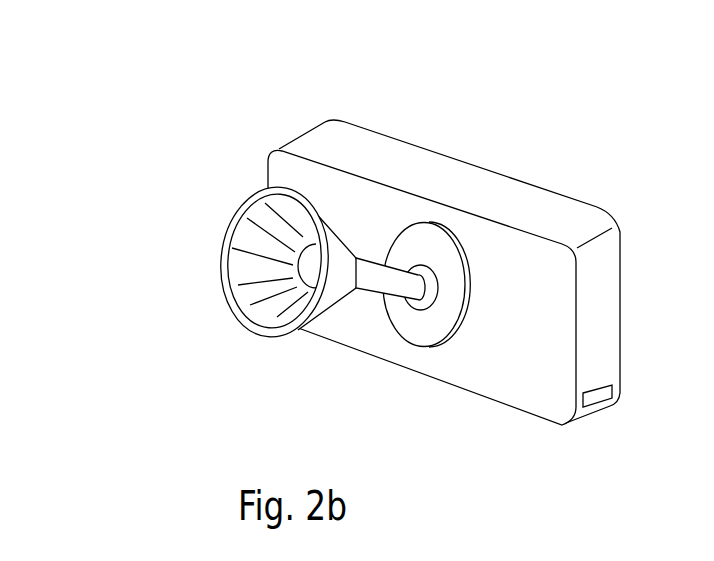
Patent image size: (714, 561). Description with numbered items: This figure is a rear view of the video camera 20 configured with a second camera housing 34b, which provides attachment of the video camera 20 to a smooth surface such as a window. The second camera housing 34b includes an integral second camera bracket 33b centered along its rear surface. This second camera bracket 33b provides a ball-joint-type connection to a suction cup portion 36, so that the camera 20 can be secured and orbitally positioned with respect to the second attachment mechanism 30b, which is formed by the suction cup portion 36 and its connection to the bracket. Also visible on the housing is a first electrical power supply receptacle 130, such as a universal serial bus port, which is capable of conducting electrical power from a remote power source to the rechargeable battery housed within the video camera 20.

The video camera 20 is at (339, 248).
The second attachment mechanism 30b is at (231, 210).
The second camera bracket 33b is at (427, 243).
The second camera housing 34b is at (565, 222).
The suction cup portion 36 is at (375, 250).
The first electrical power supply receptacle 130 is at (597, 397).